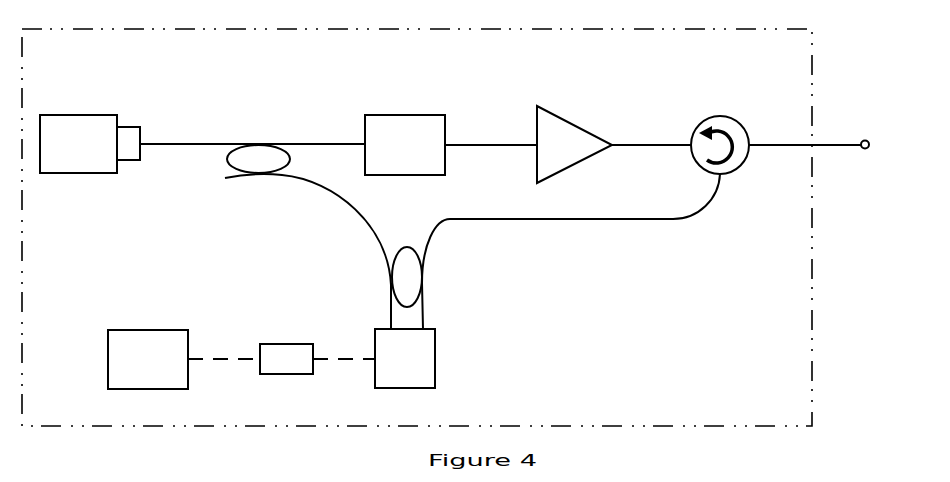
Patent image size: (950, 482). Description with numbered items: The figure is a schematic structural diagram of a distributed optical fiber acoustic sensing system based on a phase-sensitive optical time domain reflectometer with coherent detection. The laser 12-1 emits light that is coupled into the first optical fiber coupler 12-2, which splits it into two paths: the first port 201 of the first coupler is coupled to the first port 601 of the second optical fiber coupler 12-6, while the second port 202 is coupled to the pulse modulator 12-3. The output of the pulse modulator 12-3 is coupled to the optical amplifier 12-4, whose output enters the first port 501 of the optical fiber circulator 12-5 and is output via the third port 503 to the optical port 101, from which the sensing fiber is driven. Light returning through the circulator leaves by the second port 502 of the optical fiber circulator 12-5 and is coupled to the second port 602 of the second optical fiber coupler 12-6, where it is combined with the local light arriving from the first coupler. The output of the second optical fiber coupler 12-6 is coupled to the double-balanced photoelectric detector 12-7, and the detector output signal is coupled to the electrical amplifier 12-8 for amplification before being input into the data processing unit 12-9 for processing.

The laser 12-1 is at (133, 122).
The first optical fiber coupler 12-2 is at (283, 123).
The pulse modulator 12-3 is at (451, 111).
The optical amplifier 12-4 is at (598, 114).
The optical fiber circulator 12-5 is at (747, 112).
The second optical fiber coupler 12-6 is at (460, 277).
The double-balanced photoelectric detector 12-7 is at (456, 353).
The electrical amplifier 12-8 is at (281, 336).
The data processing unit 12-9 is at (162, 338).
The optical port 101 is at (893, 147).
The first port of the first fiber coupler 201 is at (308, 229).
The second port of the first fiber coupler 202 is at (327, 132).
The first port of the fiber circulator 501 is at (651, 131).
The second port of the optical fiber circulator 502 is at (604, 196).
The third port of the fiber circulator 503 is at (805, 131).
The first port of the second fiber coupler 601 is at (369, 296).
The second port of the second optical fiber coupler 602 is at (431, 268).